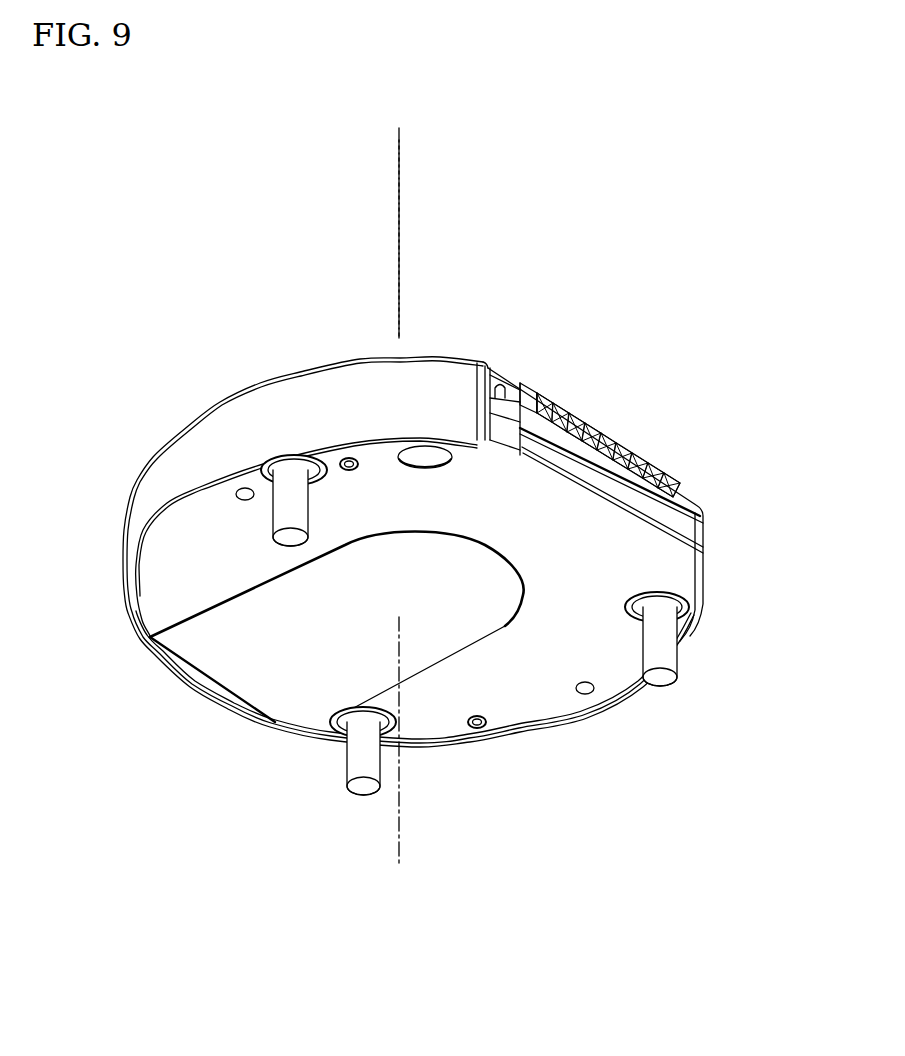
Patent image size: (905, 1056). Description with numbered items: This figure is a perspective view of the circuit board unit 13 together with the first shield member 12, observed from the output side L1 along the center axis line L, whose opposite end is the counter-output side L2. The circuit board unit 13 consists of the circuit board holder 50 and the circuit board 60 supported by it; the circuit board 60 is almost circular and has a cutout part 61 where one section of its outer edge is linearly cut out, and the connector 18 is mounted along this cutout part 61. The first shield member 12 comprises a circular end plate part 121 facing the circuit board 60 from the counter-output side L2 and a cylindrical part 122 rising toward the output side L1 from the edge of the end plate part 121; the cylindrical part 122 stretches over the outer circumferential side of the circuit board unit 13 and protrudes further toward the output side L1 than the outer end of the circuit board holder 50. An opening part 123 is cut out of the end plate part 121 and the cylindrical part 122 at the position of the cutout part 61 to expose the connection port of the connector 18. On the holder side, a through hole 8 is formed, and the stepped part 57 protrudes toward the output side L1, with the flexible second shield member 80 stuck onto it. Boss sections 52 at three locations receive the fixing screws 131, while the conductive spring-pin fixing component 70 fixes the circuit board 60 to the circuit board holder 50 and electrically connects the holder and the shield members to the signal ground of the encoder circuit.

The through hole 8 is at (470, 362).
The first shield member 12 is at (190, 313).
The end plate part 121 is at (318, 388).
The cylindrical part 122 is at (232, 423).
The opening part 123 is at (490, 383).
The circuit board unit 13 is at (778, 447).
The connector 18 is at (528, 400).
The circuit board holder 50 is at (673, 538).
The boss sections 52 is at (265, 477).
The stepped part 57 is at (432, 533).
The circuit board 60 is at (675, 515).
The cutout part 61 is at (623, 483).
The fixing component 70 is at (368, 447).
The second shield member 80 is at (470, 572).
The fixing screws 131 is at (280, 520).
The center axis line L is at (401, 183).
The output side L1 is at (397, 755).
The counter-output side L2 is at (397, 219).